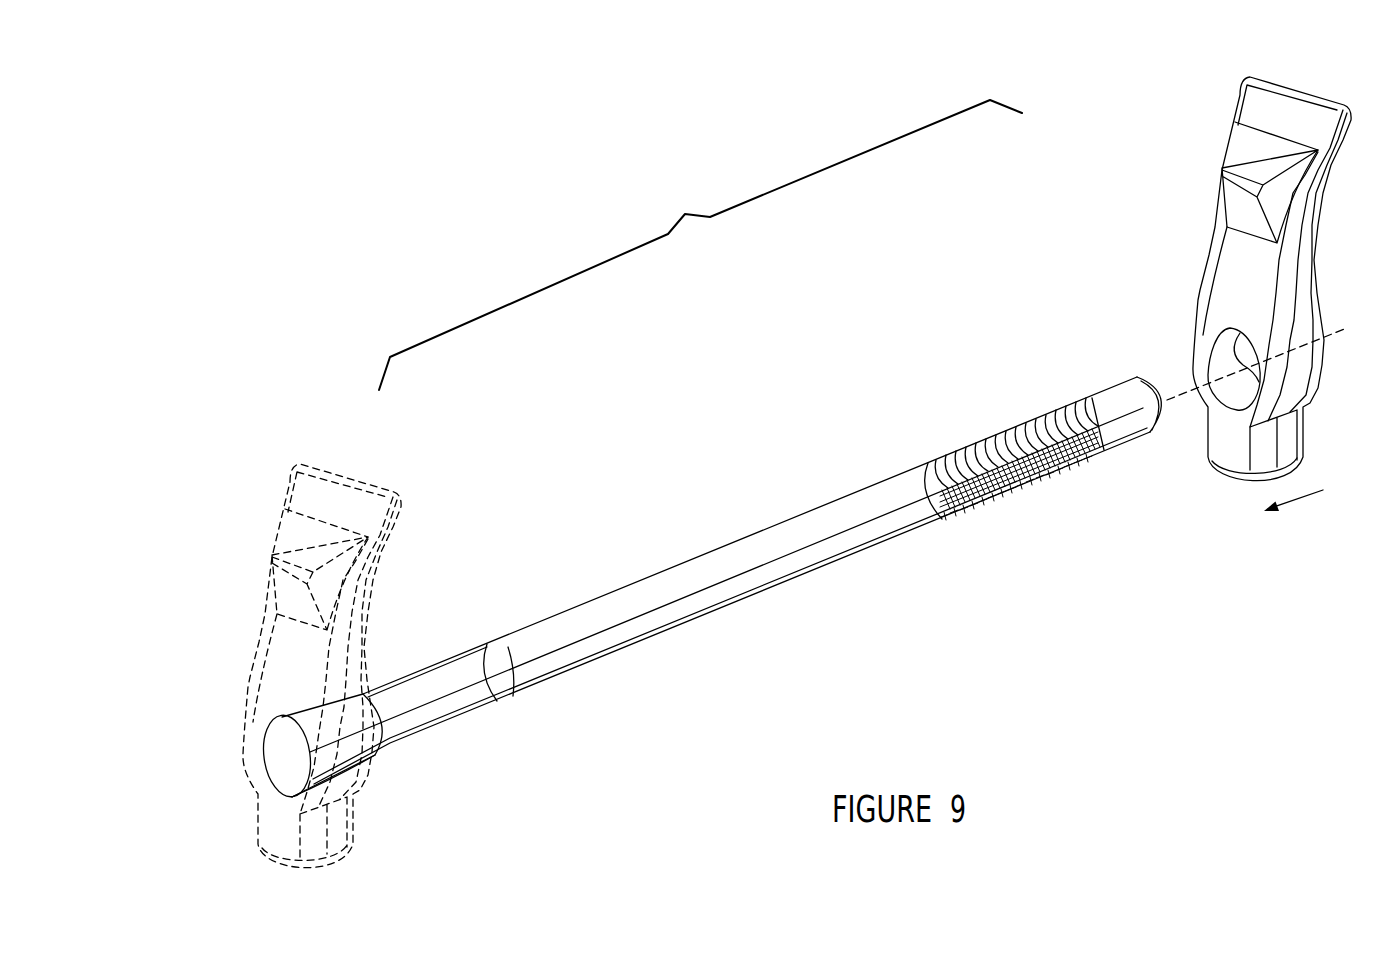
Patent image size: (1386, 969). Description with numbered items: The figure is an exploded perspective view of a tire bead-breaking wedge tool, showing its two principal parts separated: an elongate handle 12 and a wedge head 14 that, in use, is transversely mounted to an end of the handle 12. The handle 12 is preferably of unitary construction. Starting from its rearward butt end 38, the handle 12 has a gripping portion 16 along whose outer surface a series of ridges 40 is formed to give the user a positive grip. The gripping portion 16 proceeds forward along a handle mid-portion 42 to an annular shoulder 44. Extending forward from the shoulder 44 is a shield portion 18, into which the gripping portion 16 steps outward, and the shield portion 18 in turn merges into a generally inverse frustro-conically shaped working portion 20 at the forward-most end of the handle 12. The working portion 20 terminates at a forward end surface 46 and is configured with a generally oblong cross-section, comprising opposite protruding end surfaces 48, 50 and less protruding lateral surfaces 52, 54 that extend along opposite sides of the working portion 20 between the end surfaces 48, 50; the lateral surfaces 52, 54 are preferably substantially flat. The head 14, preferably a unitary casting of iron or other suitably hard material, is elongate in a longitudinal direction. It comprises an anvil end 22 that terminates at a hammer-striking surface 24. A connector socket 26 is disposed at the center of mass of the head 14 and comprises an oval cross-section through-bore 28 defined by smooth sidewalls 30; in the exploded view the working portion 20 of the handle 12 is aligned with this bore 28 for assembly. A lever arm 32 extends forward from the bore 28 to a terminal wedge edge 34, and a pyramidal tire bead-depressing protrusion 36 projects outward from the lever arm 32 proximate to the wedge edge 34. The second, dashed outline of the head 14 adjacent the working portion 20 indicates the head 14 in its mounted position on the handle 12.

The elongate handle 12 is at (767, 628).
The wedge head 14 is at (1329, 216).
The gripping portion 16 is at (887, 475).
The shield portion 18 is at (412, 668).
The working portion 20 is at (288, 678).
The anvil end 22 is at (1308, 428).
The hammer-striking surface 24 is at (1258, 485).
The connector socket 26 is at (1323, 367).
The through-bore 28 is at (1220, 369).
The smooth sidewalls 30 is at (1235, 350).
The lever arm 32 is at (1230, 257).
The wedge edge 34 is at (1333, 103).
The pyramidal tire bead-depressing protrusion 36 is at (1225, 183).
The butt end 38 is at (1163, 408).
The ridges 40 is at (1027, 478).
The handle mid-portion 42 is at (640, 582).
The annular shoulder 44 is at (493, 648).
The forward end surface 46 is at (280, 760).
The protruding end surface 48 is at (283, 716).
The protruding end surface 50 is at (288, 799).
The lateral surface 52 is at (957, 508).
The lateral surface 54 is at (266, 749).